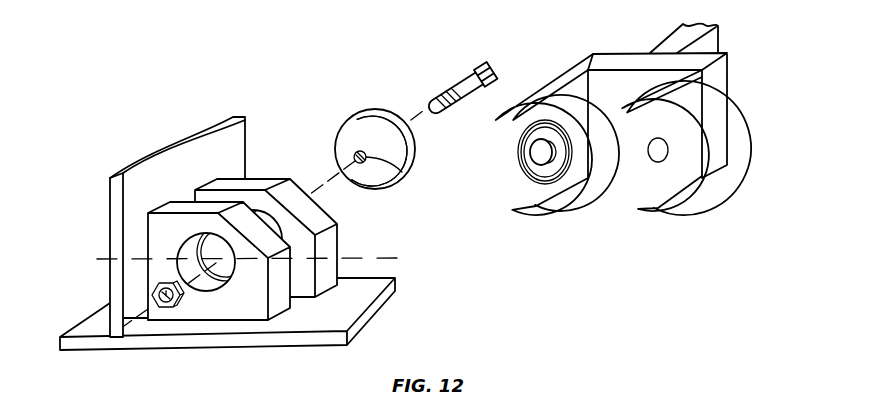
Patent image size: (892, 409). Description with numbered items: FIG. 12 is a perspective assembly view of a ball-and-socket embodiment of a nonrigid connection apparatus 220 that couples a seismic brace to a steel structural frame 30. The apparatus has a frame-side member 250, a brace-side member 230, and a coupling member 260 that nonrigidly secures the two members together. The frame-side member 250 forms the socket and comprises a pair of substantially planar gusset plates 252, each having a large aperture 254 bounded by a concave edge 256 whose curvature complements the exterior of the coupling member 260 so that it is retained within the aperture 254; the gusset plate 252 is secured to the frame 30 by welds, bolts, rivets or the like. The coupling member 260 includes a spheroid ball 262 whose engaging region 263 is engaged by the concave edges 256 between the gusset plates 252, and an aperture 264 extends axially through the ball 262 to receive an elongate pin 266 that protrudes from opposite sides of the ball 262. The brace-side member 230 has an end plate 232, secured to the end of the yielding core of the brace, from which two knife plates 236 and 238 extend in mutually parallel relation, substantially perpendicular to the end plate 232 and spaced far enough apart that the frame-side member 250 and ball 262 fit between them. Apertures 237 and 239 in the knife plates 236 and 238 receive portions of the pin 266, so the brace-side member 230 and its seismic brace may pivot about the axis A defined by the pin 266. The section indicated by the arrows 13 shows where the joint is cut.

The nonrigid connection apparatus 220 is at (197, 90).
The steel structural frame 30 is at (91, 353).
The frame-side member 250 is at (156, 327).
The gusset plate 252 is at (300, 283).
The aperture 254 is at (197, 193).
The concave edge 256 is at (331, 226).
The coupling member 260 is at (348, 112).
The ball 262 is at (336, 148).
The engaging region 263 is at (363, 151).
The aperture 264 is at (402, 168).
The elongate pin 266 is at (456, 84).
The axis A is at (427, 108).
The section line 13- 13 is at (97, 259).
The brace-side member 230 is at (690, 190).
The end plate 232 is at (713, 100).
The knife plate 236 is at (556, 80).
The aperture 237 is at (543, 152).
The knife plate 238 is at (692, 155).
The aperture 239 is at (660, 148).